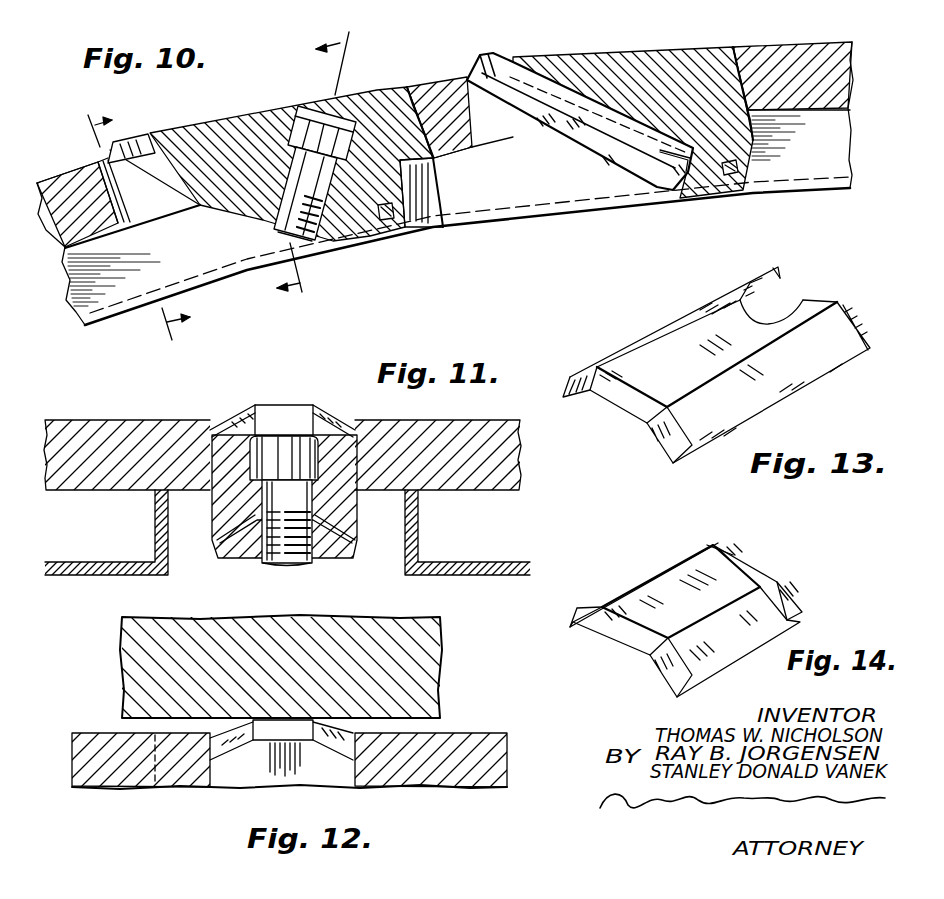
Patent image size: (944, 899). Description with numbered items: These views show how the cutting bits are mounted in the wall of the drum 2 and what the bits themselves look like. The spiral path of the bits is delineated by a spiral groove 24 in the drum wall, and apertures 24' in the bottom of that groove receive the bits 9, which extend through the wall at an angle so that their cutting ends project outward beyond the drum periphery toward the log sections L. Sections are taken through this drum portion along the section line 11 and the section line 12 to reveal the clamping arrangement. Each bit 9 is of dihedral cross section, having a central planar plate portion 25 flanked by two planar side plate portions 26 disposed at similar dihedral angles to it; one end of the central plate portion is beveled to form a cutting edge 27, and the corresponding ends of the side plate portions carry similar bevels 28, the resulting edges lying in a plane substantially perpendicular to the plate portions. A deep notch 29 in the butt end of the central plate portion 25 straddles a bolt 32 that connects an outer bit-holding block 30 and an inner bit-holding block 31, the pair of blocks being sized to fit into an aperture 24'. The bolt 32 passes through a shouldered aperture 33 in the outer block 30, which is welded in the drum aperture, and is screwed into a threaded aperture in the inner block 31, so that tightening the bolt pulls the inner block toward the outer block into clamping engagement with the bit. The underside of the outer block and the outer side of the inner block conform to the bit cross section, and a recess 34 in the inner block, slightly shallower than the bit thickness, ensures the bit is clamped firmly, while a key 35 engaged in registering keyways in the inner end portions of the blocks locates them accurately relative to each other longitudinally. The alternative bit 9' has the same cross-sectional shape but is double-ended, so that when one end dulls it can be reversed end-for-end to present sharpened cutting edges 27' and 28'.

In FIG. 10, the drum 2 is at (783, 50).
In FIG. 11, the drum 2 is at (108, 427).
In FIG. 12, the drum 2 is at (473, 733).
In FIG. 10, the cutting bit 9 is at (400, 103).
In FIG. 11, the cutting bit 9 is at (282, 399).
In FIG. 12, the cutting bit 9 is at (283, 765).
In FIG. 13, the cutting bit 9 is at (703, 337).
In FIG. 14, the cutting bit 9' is at (681, 584).
In FIG. 10, the section line 11— 11 is at (322, 160).
In FIG. 10, the section line 12— 12 is at (124, 229).
In FIG. 10, the spiral groove 24 is at (799, 165).
In FIG. 11, the spiral groove 24 is at (287, 548).
In FIG. 10, the aperture 24' is at (322, 187).
In FIG. 13, the central plate portion 25 is at (675, 343).
In FIG. 14, the central plate portion 25 is at (717, 572).
In FIG. 13, the side plate portion 26 is at (600, 362).
In FIG. 14, the side plate portion 26 is at (620, 587).
In FIG. 13, the cutting edge 27 is at (626, 407).
In FIG. 14, the cutting edge 27 is at (620, 640).
In FIG. 14, the cutting edge 27' is at (759, 578).
In FIG. 13, the bevel 28 is at (609, 427).
In FIG. 14, the bevel 28 is at (610, 655).
In FIG. 14, the cutting edge 28' is at (762, 563).
In FIG. 13, the notch 29 is at (780, 280).
In FIG. 10, the outer bit-holding block 30 is at (200, 137).
In FIG. 11, the outer bit-holding block 30 is at (347, 515).
In FIG. 10, the inner bit-holding block 31 is at (237, 213).
In FIG. 11, the inner bit-holding block 31 is at (240, 547).
In FIG. 12, the inner bit-holding block 31 is at (237, 773).
In FIG. 10, the bolt 32 is at (277, 230).
In FIG. 11, the bolt 32 is at (285, 560).
In FIG. 10, the shouldered aperture 33 is at (292, 148).
In FIG. 10, the recess 34 is at (333, 240).
In FIG. 10, the key 35 is at (383, 218).
In FIG. 12, the load member L is at (437, 653).